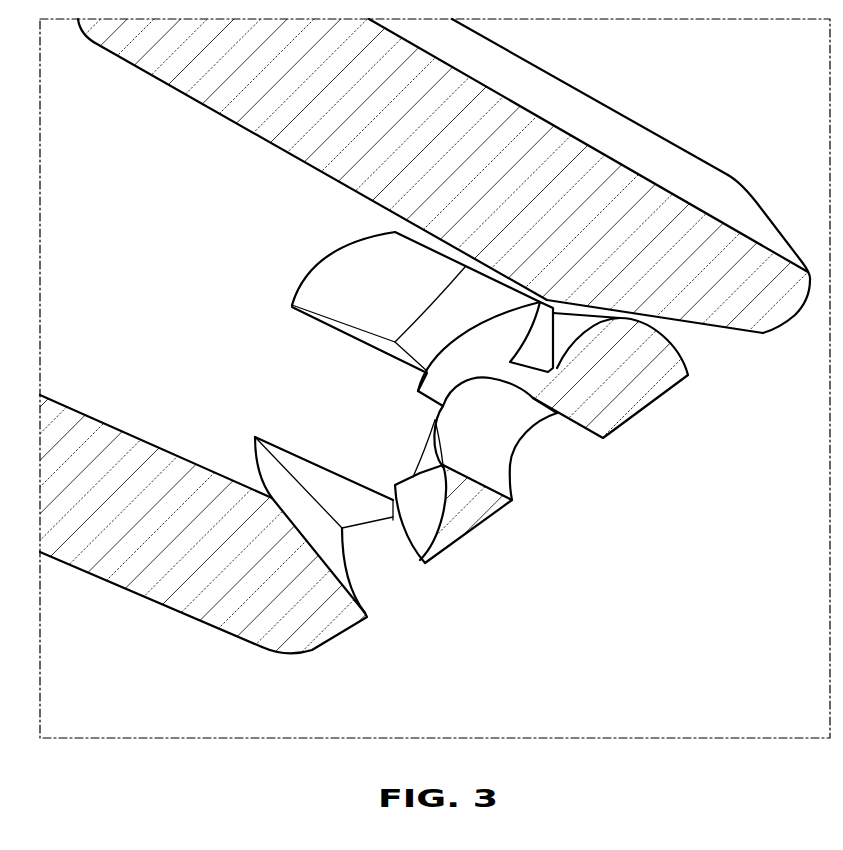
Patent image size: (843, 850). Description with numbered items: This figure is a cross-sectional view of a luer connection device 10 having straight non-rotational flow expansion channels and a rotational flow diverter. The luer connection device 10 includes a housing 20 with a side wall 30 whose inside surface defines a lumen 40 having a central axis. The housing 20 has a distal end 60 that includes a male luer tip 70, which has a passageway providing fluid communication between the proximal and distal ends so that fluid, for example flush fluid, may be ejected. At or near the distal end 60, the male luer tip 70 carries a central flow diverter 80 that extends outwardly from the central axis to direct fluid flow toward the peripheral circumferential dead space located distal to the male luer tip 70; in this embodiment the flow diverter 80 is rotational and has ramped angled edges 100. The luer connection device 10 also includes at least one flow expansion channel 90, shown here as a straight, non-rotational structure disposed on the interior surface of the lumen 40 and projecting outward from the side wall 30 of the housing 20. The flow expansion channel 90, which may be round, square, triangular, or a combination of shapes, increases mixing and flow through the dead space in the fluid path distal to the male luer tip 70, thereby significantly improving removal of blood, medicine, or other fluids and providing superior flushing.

The luer connection device 10 is at (758, 126).
The housing 20 is at (587, 116).
The side wall 30 is at (197, 570).
The lumen 40 is at (197, 420).
The distal end 60 is at (790, 318).
The male luer tip 70 is at (247, 641).
The central flow diverter 80 is at (460, 518).
The flow expansion channel 90 is at (358, 275).
The ramped angled edges 100 is at (633, 370).